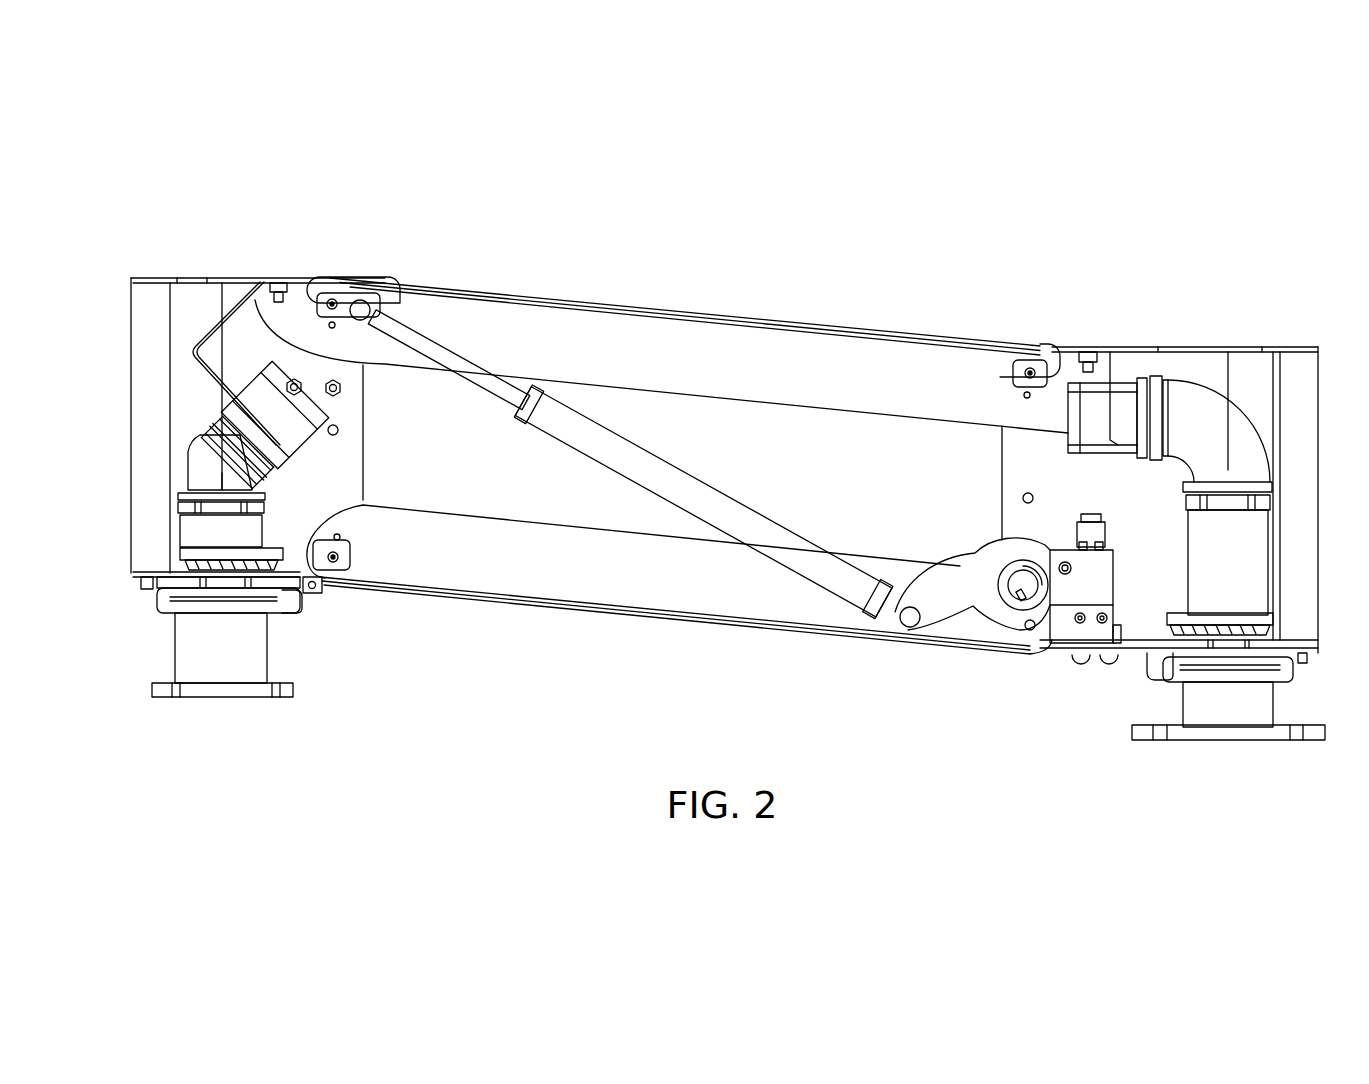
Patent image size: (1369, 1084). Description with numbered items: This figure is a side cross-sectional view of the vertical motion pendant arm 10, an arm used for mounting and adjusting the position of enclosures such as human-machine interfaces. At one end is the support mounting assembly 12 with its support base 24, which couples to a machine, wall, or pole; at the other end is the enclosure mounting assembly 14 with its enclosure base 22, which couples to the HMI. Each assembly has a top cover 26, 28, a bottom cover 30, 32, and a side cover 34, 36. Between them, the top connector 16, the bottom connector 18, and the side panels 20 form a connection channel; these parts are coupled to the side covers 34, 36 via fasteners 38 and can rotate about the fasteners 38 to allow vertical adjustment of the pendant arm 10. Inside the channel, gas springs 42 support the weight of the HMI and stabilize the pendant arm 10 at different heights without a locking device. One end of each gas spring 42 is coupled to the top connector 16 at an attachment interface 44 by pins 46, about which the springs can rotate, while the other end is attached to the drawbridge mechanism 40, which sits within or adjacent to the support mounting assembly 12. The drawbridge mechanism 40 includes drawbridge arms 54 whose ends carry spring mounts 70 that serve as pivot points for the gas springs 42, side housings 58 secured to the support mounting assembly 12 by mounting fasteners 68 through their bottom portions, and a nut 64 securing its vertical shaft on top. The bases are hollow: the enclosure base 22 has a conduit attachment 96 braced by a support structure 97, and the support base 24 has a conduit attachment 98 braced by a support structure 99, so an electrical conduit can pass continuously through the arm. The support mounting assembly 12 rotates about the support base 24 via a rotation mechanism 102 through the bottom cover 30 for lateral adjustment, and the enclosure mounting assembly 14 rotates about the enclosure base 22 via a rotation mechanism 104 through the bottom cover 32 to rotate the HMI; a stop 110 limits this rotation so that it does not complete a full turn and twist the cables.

The vertical motion pendant arm 10 is at (765, 245).
The support mounting assembly 12 is at (1255, 305).
The enclosure mounting assembly 14 is at (182, 248).
The top connector 16 is at (780, 348).
The bottom connector 18 is at (513, 562).
The side panels 20 is at (718, 425).
The enclosure base 22 is at (163, 687).
The support base 24 is at (1232, 735).
The top cover 26 is at (1184, 347).
The top cover 28 is at (200, 278).
The bottom cover 30 is at (1310, 653).
The bottom cover 32 is at (148, 576).
The side cover 34 is at (1302, 379).
The side cover 36 is at (152, 386).
The fasteners 38 is at (332, 297).
The drawbridge mechanism 40 is at (960, 690).
The gas springs 42 is at (600, 440).
The attachment interface 44 is at (362, 290).
The pins 46 is at (372, 310).
The drawbridge arms 54 is at (947, 601).
The side housings 58 is at (1090, 590).
The nut 64 is at (1080, 518).
The mounting fasteners 68 is at (1116, 662).
The spring mounts 70 is at (905, 625).
The conduit attachment 96 is at (190, 530).
The support structure 97 is at (200, 333).
The conduit attachment 98 is at (1247, 552).
The support structure 99 is at (1112, 364).
The rotation mechanism 102 is at (1202, 672).
The rotation mechanism 104 is at (228, 603).
The stop 110 is at (1153, 675).